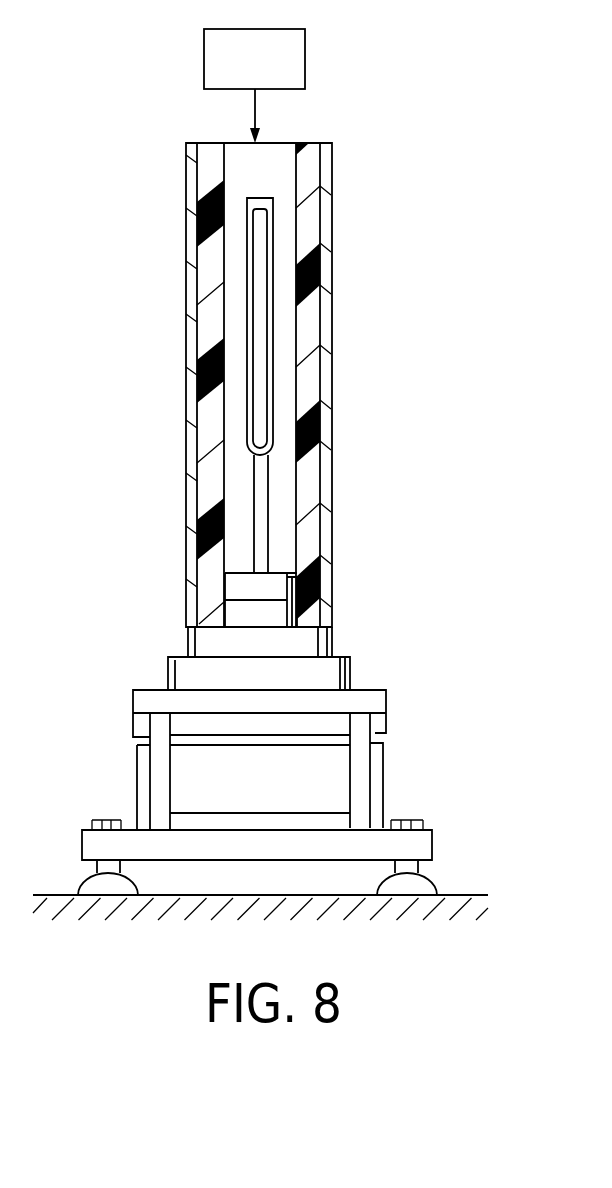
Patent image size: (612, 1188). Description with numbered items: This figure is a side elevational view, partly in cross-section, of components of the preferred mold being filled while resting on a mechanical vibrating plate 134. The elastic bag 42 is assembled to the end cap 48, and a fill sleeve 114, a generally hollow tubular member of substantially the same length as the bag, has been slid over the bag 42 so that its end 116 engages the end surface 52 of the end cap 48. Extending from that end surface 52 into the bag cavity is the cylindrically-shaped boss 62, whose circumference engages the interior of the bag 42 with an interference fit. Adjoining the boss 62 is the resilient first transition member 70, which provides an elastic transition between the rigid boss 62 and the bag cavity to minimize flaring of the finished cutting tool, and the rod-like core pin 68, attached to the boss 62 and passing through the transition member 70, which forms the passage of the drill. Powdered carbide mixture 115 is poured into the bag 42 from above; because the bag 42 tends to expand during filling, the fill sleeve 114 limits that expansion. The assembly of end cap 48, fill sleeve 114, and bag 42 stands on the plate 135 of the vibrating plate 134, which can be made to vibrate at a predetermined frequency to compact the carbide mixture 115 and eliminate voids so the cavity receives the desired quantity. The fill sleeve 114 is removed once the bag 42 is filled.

The powdered carbide mixture 115 is at (284, 30).
The bag 42 is at (320, 228).
The fill sleeve 114 is at (320, 343).
The core pin 68 is at (268, 478).
The end surface 52 is at (258, 627).
The boss 62 is at (278, 615).
The first transition member 70 is at (278, 586).
The end of fill sleeve 116 is at (192, 630).
The end cap 48 is at (350, 673).
The plate 135 is at (387, 700).
The mechanical vibrating plate 134 is at (396, 779).